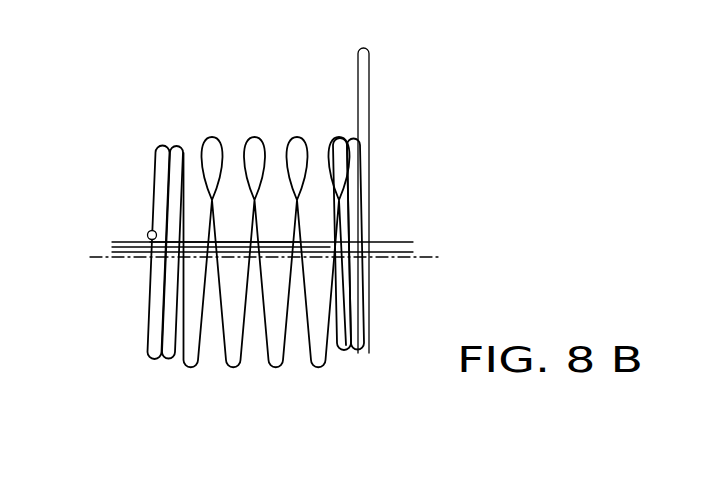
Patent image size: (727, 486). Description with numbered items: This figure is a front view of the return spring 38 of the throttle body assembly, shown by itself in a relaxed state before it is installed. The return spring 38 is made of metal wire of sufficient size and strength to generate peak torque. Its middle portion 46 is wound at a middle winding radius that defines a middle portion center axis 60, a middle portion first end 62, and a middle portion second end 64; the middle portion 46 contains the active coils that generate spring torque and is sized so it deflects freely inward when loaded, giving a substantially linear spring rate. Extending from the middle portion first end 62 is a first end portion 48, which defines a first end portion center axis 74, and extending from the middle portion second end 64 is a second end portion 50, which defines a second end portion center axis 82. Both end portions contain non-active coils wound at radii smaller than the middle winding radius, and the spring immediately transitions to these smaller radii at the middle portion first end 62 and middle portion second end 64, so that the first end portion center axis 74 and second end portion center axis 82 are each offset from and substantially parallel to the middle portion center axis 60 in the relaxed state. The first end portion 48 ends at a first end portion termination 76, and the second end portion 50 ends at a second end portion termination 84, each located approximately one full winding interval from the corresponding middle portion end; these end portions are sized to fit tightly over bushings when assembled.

The return spring 38 is at (266, 238).
The middle portion 46 is at (178, 382).
The first end portion 48 is at (193, 130).
The second end portion 50 is at (336, 263).
The middle portion center axis 60 is at (413, 257).
The middle portion first end 62 is at (180, 244).
The middle portion second end 64 is at (336, 141).
The first end portion center axis 74 is at (413, 249).
The first end portion termination 76 is at (112, 247).
The second end portion center axis 82 is at (131, 243).
The second end portion termination 84 is at (366, 143).